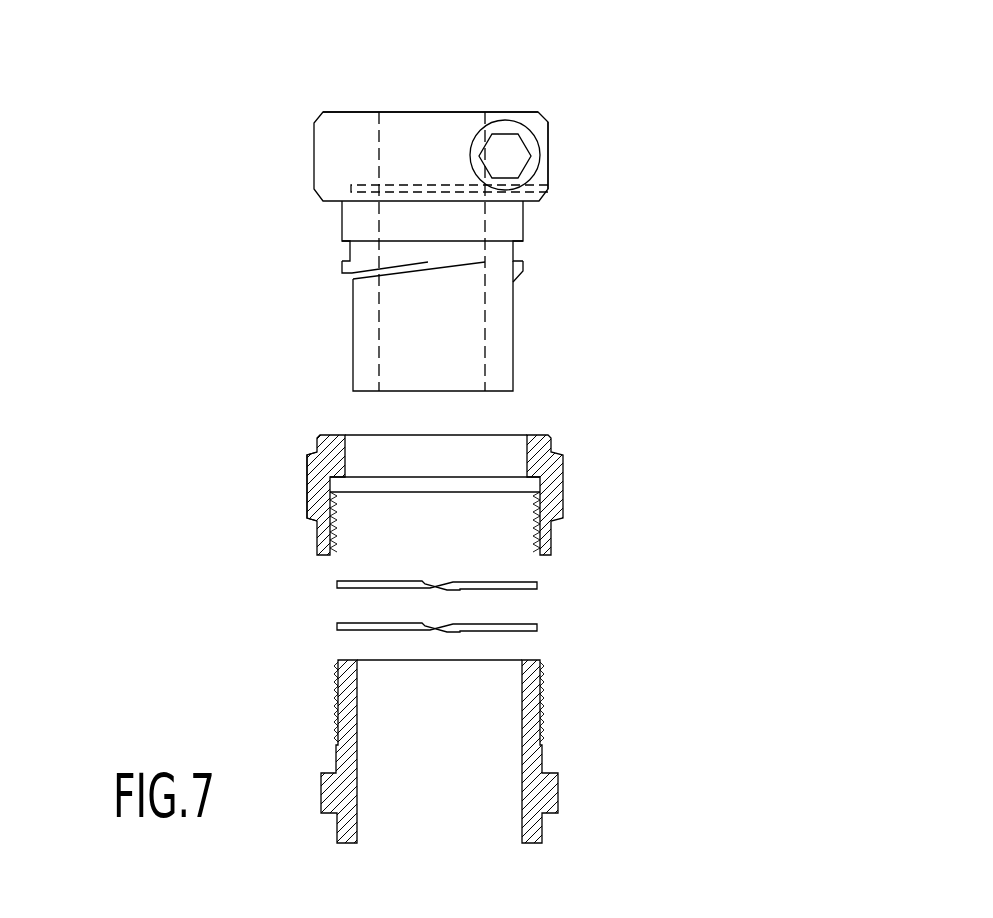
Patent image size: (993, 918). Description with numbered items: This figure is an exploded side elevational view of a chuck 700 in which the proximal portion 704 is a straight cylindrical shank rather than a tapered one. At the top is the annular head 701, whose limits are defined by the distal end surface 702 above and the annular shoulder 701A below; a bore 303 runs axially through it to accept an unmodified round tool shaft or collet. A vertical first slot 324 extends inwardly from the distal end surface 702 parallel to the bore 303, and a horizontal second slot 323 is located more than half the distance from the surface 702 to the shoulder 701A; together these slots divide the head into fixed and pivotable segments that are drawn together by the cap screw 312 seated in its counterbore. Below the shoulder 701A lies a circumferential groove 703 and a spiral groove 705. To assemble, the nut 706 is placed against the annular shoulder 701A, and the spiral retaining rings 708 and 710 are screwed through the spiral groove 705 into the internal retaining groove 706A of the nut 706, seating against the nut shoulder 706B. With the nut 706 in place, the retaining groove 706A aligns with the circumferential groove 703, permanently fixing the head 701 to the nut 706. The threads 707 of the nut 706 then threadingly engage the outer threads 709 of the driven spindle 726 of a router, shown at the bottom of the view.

The chuck 700 is at (496, 211).
The head 701 is at (448, 131).
The distal end surface 702 is at (334, 72).
The cap screw 312 is at (634, 137).
The first slot 324 is at (681, 155).
The second slot 323 is at (606, 208).
The annular shoulder 701A is at (271, 227).
The circumferential groove 703 is at (657, 251).
The spiral groove 705 is at (280, 297).
The proximal portion 704 is at (595, 326).
The bore 303 is at (549, 251).
The nut 706 is at (529, 472).
The internal retaining groove 706A is at (240, 509).
The shoulder 706B is at (246, 448).
The threads 707 is at (614, 492).
The spiral retaining ring 708 is at (632, 569).
The spiral retaining ring 710 is at (635, 610).
The threads 709 is at (598, 693).
The driven spindle 726 is at (601, 744).